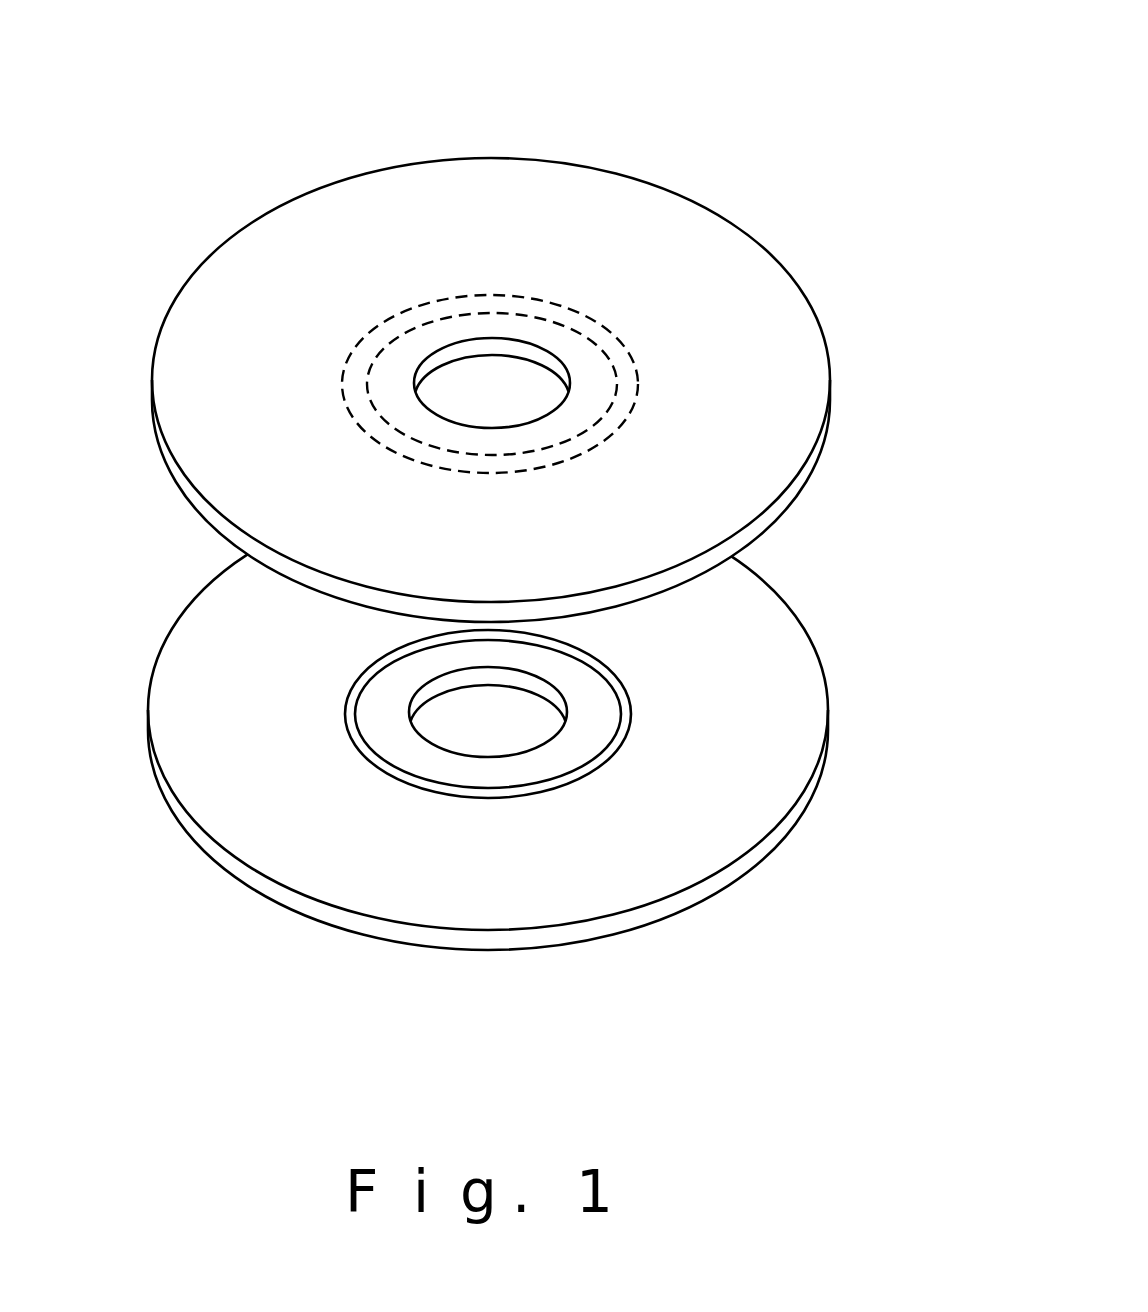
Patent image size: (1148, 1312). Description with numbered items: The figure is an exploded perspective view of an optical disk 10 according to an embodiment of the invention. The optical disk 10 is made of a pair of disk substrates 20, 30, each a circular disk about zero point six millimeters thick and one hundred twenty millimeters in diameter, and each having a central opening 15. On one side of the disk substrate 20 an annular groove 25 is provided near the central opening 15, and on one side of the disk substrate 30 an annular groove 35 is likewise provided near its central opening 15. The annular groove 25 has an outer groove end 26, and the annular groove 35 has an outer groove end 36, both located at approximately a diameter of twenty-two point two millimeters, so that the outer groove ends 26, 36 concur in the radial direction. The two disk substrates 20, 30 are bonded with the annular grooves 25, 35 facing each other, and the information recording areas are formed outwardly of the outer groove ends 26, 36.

The optical disk 10 is at (506, 522).
The central opening 15 is at (468, 385).
The disk substrate 20 is at (831, 385).
The annular groove 25 is at (355, 367).
The outer groove end 26 is at (407, 312).
The disk substrate 30 is at (829, 708).
The annular groove 35 is at (347, 716).
The outer groove end 36 is at (378, 772).